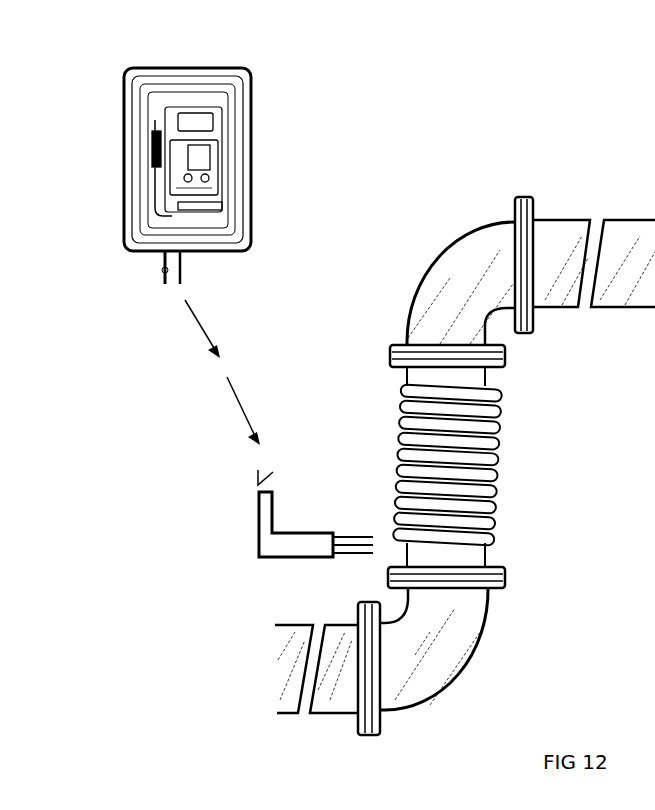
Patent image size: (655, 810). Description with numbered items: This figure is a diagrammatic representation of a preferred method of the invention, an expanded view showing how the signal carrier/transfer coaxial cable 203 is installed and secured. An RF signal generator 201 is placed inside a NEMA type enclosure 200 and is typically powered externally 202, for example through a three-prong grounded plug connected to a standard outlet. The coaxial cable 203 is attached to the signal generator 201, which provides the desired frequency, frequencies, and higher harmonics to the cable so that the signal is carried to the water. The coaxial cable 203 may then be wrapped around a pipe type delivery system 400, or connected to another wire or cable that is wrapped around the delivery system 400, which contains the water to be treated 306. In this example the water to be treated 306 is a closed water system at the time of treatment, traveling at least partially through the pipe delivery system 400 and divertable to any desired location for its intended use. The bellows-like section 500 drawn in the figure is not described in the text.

The NEMA type enclosure 200 is at (185, 68).
The RF signal generator 201 is at (182, 138).
The external power 202 is at (163, 286).
The signal carrier/transfer coaxial cable 203 is at (277, 533).
The water to be treated 306 is at (480, 285).
The pipe type delivery system 400 is at (452, 243).
The bellows expansion joint 500 is at (477, 447).